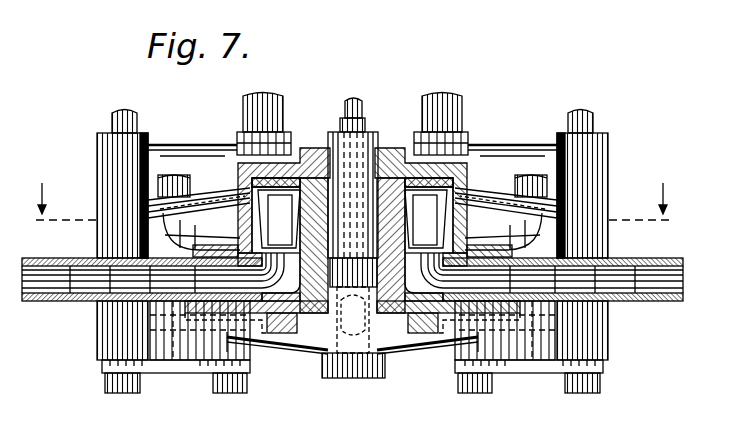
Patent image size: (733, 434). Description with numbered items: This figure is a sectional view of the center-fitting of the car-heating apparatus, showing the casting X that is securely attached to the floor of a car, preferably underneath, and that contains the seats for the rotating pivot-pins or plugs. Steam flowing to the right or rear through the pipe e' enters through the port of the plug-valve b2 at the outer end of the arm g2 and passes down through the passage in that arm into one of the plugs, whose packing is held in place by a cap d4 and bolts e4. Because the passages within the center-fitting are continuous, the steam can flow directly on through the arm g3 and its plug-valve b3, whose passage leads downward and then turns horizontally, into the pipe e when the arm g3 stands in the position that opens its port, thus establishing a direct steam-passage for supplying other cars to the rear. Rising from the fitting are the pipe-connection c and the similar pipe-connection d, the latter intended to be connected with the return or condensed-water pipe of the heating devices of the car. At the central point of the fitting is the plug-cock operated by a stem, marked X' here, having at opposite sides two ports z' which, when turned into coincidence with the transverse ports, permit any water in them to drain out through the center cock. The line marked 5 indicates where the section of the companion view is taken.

The valve spindle / stem X' is at (352, 115).
The pipe-connection c is at (264, 112).
The pipe-connection d is at (441, 115).
The section line 5 is at (350, 205).
The arm g2 is at (196, 238).
The arm g3 is at (523, 238).
The plug-valve b2 is at (279, 219).
The plug-valve b3 is at (426, 219).
The pipe e' is at (161, 288).
The pipe e is at (544, 289).
The cap d4 is at (172, 373).
The bolt e4 is at (352, 392).
The casting X is at (352, 357).
The port z' is at (353, 374).